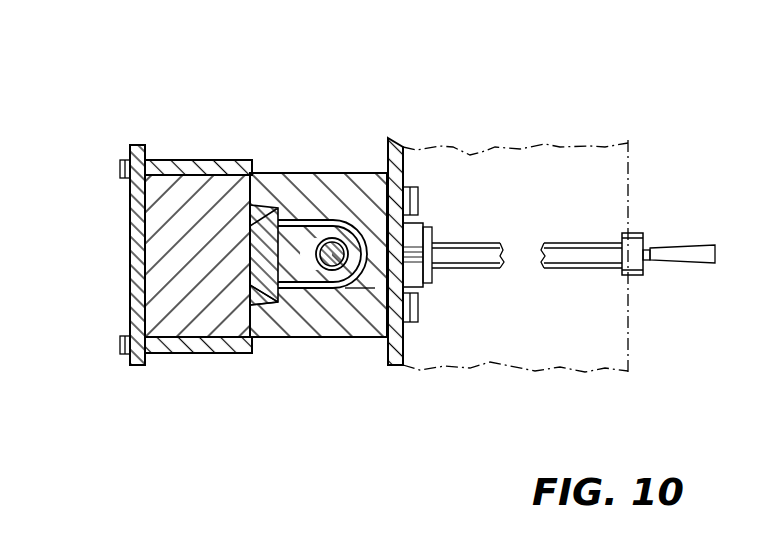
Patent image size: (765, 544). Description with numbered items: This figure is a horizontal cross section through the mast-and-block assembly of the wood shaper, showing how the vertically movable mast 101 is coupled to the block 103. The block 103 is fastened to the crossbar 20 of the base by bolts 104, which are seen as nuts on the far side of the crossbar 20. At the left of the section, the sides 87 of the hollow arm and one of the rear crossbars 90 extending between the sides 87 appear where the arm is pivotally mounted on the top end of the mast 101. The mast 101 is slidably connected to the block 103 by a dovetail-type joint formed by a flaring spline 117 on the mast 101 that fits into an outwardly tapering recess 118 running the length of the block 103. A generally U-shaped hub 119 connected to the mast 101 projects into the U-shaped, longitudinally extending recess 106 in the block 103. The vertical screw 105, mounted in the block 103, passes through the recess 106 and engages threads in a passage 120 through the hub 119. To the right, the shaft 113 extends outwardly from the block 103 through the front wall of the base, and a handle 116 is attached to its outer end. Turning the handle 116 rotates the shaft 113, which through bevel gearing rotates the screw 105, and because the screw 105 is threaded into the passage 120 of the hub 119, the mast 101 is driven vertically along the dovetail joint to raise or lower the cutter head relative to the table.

The crossbar 20 is at (402, 147).
The sides 87 is at (168, 165).
The rear crossbars 90 is at (130, 250).
The mast 101 is at (163, 210).
The block 103 is at (283, 195).
The bolts 104 is at (412, 202).
The screw 105 is at (322, 240).
The recess 106 is at (362, 300).
The shaft 113 is at (587, 258).
The handle 116 is at (700, 258).
The flaring spline 117 is at (270, 243).
The outwardly tapering recess 118 is at (270, 300).
The hub 119 is at (310, 288).
The passage 120 is at (340, 237).